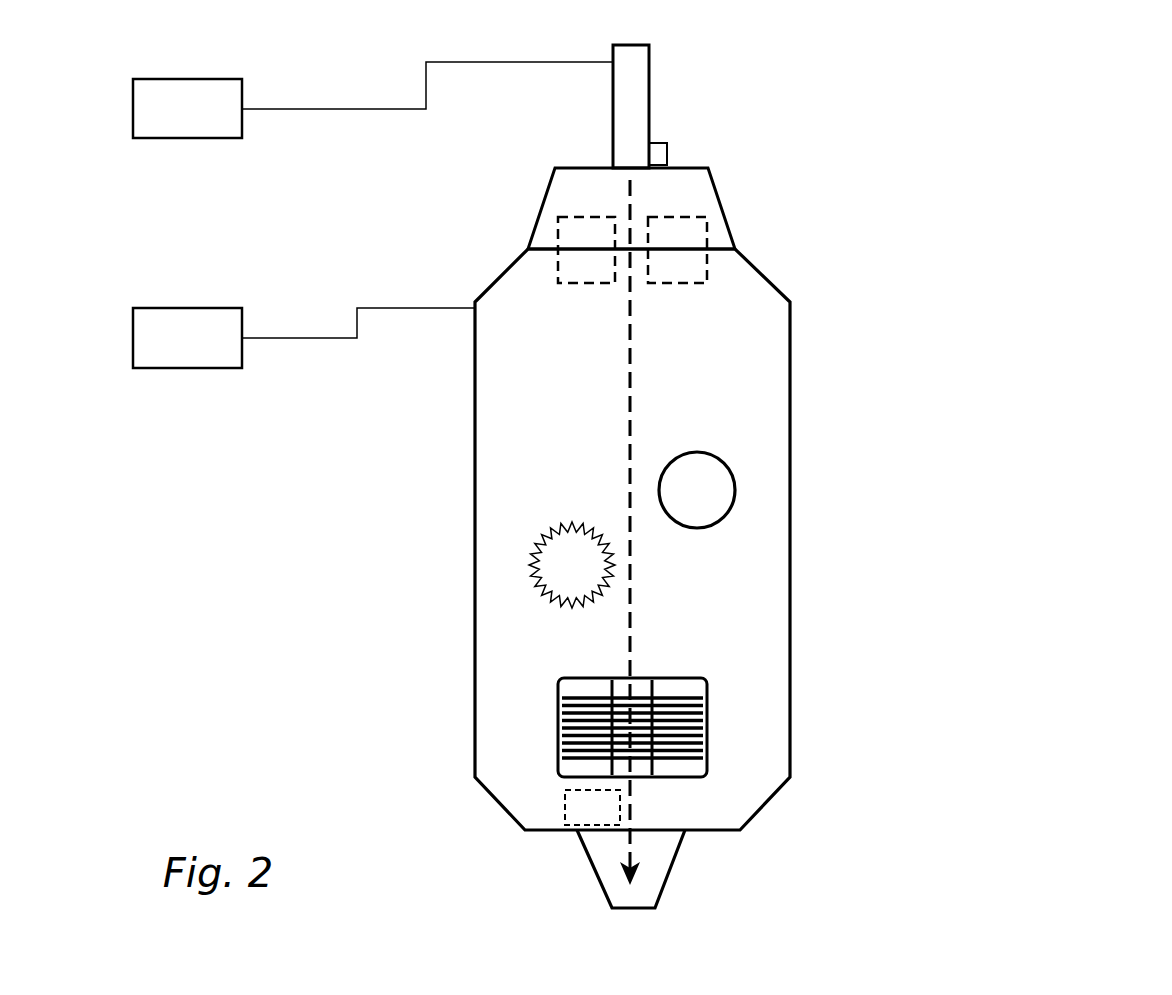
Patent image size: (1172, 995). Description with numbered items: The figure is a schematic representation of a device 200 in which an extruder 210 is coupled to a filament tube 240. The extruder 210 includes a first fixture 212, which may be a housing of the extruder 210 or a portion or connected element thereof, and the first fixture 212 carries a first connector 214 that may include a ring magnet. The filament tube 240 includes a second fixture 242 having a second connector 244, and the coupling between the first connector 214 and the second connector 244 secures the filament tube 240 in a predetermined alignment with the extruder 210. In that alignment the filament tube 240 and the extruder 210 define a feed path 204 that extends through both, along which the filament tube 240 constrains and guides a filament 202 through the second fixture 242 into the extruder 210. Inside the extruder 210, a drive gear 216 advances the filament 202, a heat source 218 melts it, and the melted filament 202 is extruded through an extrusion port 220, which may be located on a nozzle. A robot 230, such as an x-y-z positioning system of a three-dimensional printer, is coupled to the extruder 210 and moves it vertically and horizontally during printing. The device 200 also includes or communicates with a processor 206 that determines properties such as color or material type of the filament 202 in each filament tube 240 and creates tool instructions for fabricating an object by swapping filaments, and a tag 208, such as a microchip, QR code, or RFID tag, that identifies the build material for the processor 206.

The device 200 is at (994, 106).
The filament 202 is at (630, 80).
The feed path 204 is at (632, 380).
The processor 206 is at (373, 100).
The tag 208 is at (667, 157).
The extruder 210 is at (458, 645).
The first fixture 212 is at (740, 263).
The first connector 214 is at (568, 257).
The drive gear 216 is at (528, 563).
The heat source 218 is at (565, 803).
The extrusion port 220 is at (640, 909).
The robot 230 is at (304, 338).
The filament tube 240 is at (574, 123).
The second fixture 242 is at (703, 186).
The second connector 244 is at (568, 234).